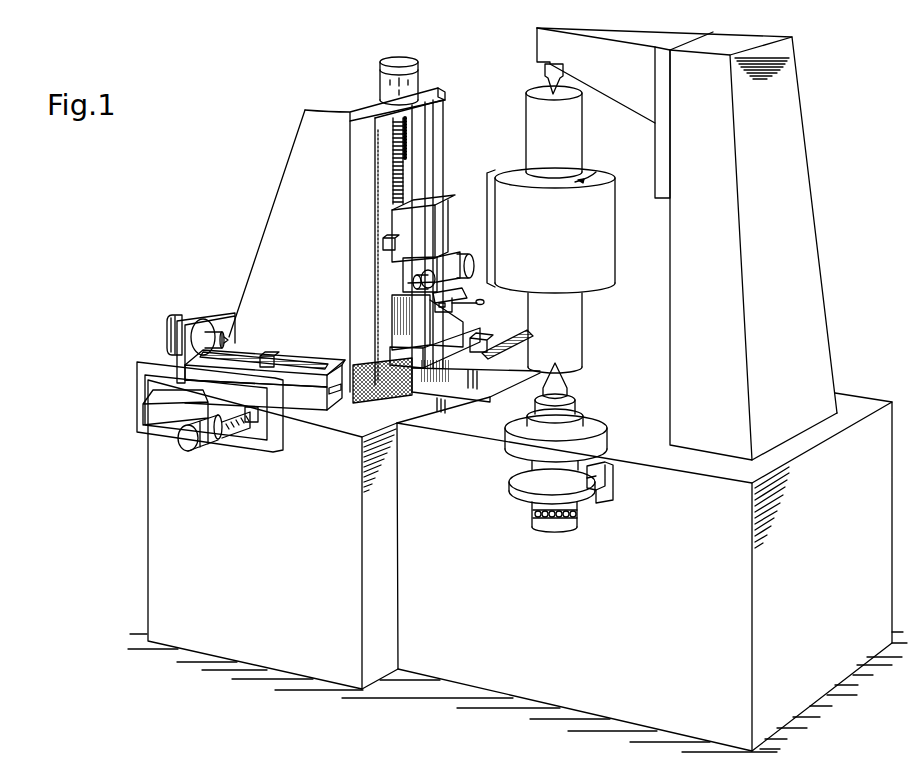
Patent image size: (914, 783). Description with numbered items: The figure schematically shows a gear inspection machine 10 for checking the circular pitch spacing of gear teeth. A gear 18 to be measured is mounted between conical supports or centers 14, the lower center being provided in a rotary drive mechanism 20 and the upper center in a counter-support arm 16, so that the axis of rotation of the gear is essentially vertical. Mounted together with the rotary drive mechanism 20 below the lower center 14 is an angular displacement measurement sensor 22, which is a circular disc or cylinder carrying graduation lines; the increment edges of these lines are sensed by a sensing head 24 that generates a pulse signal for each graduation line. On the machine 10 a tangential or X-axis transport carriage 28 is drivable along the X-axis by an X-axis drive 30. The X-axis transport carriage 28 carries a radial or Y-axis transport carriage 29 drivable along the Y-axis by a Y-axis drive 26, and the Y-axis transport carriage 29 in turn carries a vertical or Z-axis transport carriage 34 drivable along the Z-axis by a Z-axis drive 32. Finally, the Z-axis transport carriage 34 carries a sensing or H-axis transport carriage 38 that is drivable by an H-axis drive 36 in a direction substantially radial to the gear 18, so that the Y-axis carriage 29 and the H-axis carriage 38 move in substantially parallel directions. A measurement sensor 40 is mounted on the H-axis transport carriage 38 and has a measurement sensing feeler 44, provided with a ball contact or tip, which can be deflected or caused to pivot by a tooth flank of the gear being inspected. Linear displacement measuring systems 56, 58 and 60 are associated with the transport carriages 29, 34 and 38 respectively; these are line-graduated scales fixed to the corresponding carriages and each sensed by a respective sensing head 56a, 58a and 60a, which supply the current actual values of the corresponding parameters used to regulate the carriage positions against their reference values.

The gear inspection machine 10 is at (160, 550).
The centers 14 is at (548, 82).
The counter-support arm 16 is at (537, 44).
The gear 18 is at (600, 277).
The rotary drive mechanism 20 is at (598, 440).
The angular displacement measurement sensor 22 is at (585, 508).
The sensing head 24 is at (608, 500).
The Y-axis drive 26 is at (177, 333).
The X-axis transport carriage 28 is at (308, 405).
The Y-axis transport carriage 29 is at (344, 375).
The X-axis drive 30 is at (190, 448).
The Z-axis drive 32 is at (395, 88).
The Z-axis transport carriage 34 is at (432, 218).
The H-axis drive 36 is at (457, 258).
The H-axis transport carriage 38 is at (452, 280).
The measurement sensor 40 is at (475, 299).
The measurement sensing feeler 44 is at (460, 308).
The linear displacement measuring system 56 is at (249, 350).
The sensing head 56a is at (268, 355).
The linear displacement measuring system 58 is at (405, 324).
The sensing head 58a is at (405, 340).
The linear displacement measuring system 60 is at (384, 226).
The sensing head 60a is at (383, 243).